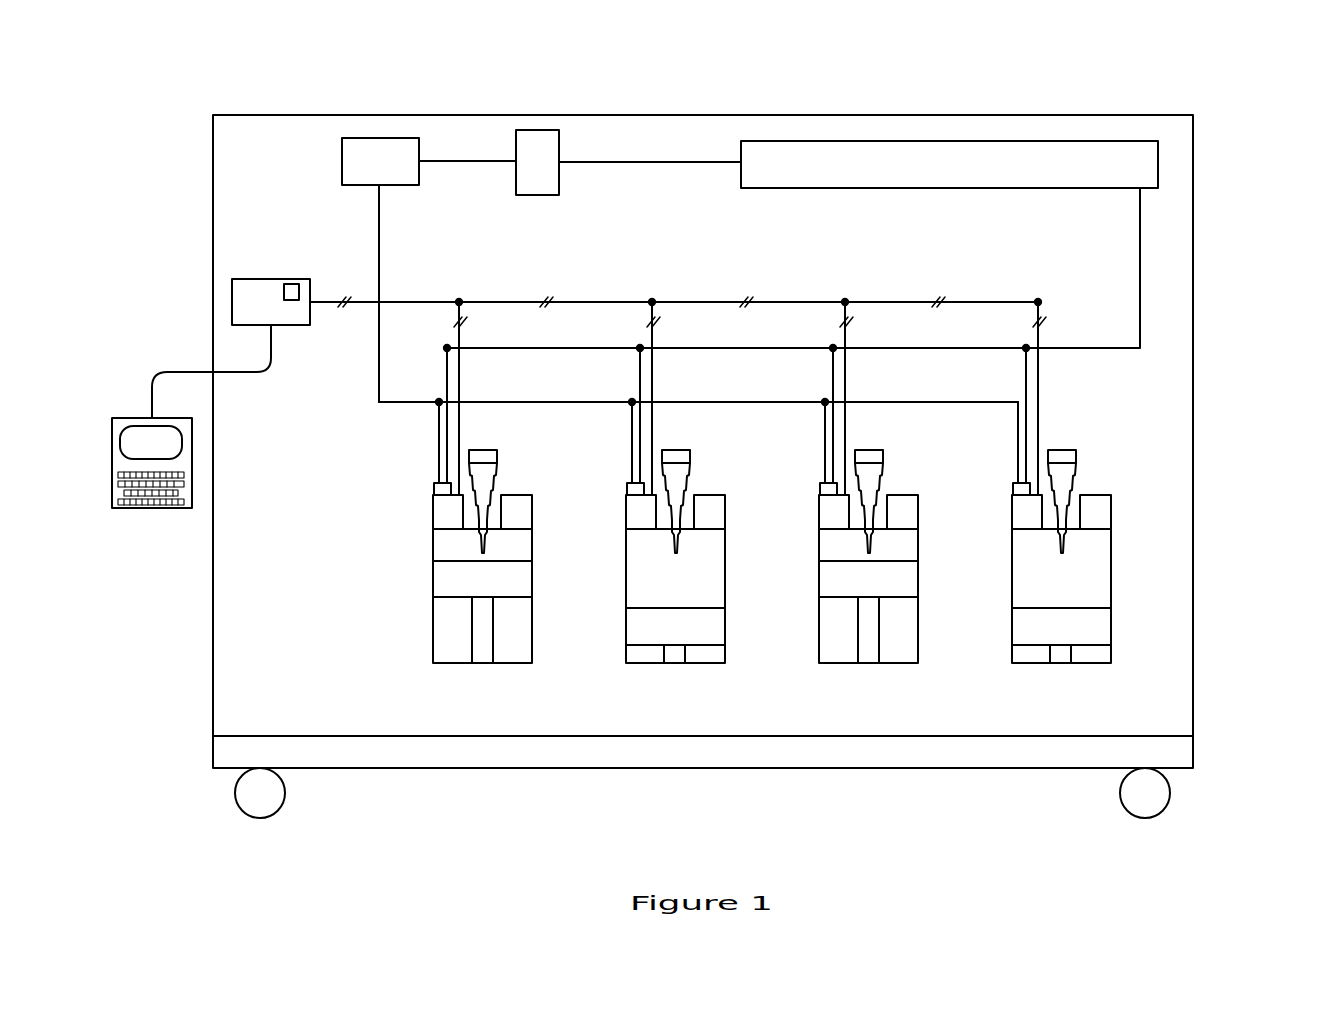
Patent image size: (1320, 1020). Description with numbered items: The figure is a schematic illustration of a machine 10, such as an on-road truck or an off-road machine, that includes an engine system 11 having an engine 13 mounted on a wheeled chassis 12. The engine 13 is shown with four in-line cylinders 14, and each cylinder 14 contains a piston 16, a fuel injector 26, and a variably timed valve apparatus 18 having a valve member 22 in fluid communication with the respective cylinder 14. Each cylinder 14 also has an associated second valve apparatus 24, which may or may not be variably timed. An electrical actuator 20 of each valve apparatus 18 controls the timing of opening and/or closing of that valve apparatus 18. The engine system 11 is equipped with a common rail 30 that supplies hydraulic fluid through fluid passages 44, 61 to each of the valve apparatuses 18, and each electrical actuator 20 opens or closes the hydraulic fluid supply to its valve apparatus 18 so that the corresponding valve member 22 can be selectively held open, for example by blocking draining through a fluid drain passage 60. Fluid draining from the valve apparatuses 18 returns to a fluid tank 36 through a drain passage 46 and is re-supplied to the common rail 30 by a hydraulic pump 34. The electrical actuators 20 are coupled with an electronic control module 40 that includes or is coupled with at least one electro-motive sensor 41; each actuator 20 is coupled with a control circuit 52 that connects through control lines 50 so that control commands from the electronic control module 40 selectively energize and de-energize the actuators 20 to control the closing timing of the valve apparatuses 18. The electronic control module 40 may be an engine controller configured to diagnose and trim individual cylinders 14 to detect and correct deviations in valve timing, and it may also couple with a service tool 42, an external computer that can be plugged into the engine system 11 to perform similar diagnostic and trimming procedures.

The machine 10 is at (1068, 101).
The engine system 11 is at (1136, 375).
The wheeled chassis 12 is at (1175, 750).
The engine 13 is at (1136, 427).
The cylinder 14 is at (445, 651).
The piston 16 is at (527, 585).
The variably timed valve apparatus 18 is at (431, 513).
The electrical actuator 20 is at (434, 487).
The valve member 22 is at (442, 520).
The second valve apparatus 24 is at (536, 502).
The fuel injector 26 is at (486, 453).
The common rail 30 is at (740, 178).
The hydraulic pump 34 is at (520, 178).
The fluid tank 36 is at (366, 178).
The electronic control module 40 is at (283, 326).
The electro-motive sensor 41 is at (286, 290).
The service tool 42 is at (106, 473).
The fluid passage 44 is at (1138, 210).
The drain passage 46 is at (775, 400).
The control line 50 is at (716, 296).
The control circuit 52 is at (460, 364).
The fluid drain passage 60 is at (438, 424).
The fluid passage 61 is at (446, 364).